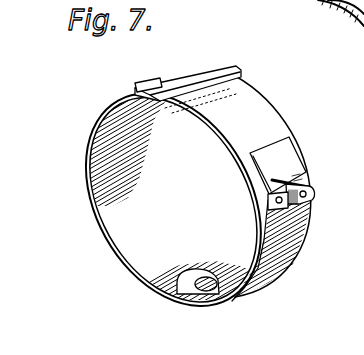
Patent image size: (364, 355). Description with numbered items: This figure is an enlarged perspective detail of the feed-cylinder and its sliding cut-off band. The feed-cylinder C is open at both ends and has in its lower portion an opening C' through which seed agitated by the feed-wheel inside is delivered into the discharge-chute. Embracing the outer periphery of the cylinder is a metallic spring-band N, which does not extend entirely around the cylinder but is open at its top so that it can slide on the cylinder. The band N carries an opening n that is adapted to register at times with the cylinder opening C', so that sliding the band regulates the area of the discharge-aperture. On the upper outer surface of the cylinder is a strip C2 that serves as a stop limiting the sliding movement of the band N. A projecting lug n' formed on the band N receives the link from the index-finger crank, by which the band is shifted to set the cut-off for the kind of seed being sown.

The feed-cylinder C is at (176, 177).
The opening in the feed-cylinder C' is at (173, 199).
The strip C2 is at (237, 68).
The spring-band N is at (291, 157).
The projecting lug n' is at (305, 185).
The opening in the band n is at (197, 307).